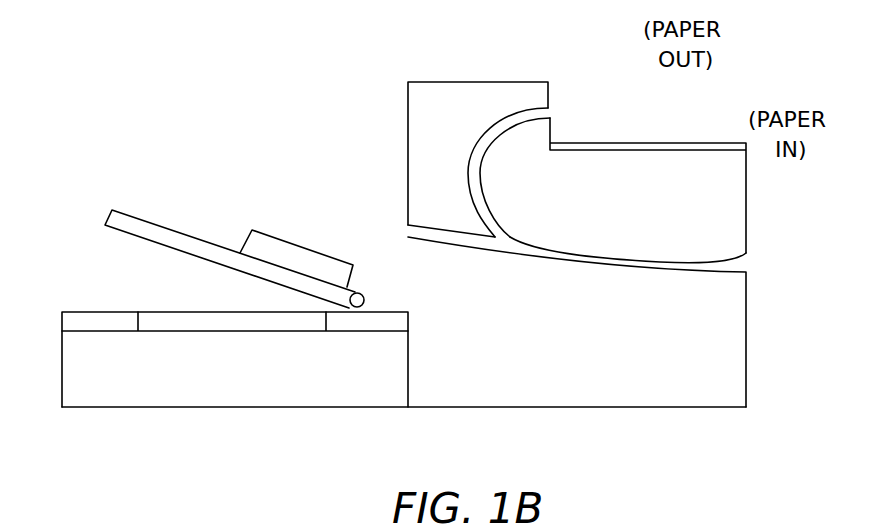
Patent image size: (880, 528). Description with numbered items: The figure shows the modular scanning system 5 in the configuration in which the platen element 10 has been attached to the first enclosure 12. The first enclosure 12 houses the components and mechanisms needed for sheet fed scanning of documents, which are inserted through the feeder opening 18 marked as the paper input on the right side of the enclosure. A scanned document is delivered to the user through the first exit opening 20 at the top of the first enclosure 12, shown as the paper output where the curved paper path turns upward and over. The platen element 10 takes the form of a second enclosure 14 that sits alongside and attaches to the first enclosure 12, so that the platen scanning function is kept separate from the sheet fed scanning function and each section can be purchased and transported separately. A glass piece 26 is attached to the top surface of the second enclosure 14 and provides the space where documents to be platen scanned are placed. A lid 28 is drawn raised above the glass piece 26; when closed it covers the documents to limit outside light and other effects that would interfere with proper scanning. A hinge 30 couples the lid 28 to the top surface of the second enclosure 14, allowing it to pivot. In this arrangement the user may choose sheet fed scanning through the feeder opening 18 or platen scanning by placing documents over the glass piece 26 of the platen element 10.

The modular scanning system 5 is at (117, 165).
The platen element 10 is at (85, 430).
The first enclosure 12 is at (577, 407).
The second enclosure 14 is at (238, 407).
The feeder opening 18 is at (745, 262).
The first exit opening 20 is at (553, 108).
The glass piece 26 is at (234, 312).
The lid 28 is at (179, 232).
The hinge 30 is at (363, 294).